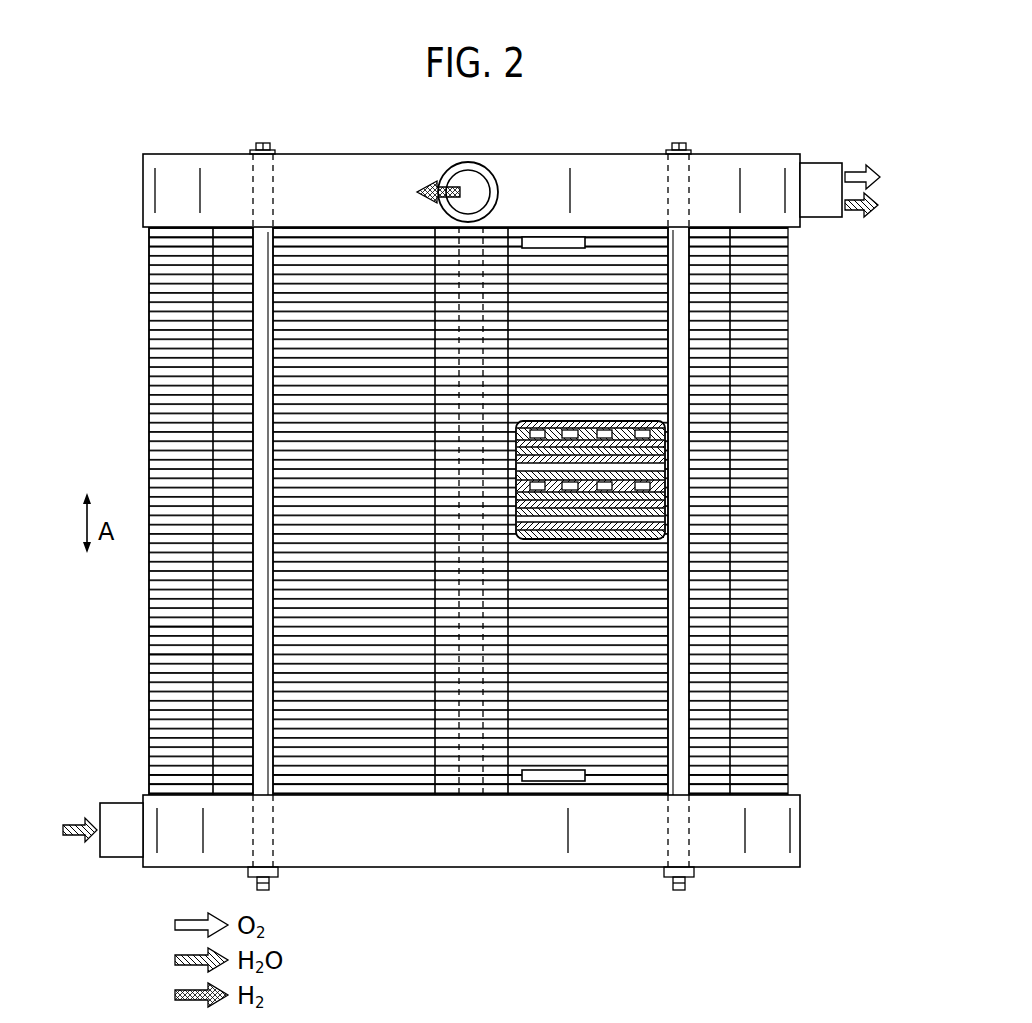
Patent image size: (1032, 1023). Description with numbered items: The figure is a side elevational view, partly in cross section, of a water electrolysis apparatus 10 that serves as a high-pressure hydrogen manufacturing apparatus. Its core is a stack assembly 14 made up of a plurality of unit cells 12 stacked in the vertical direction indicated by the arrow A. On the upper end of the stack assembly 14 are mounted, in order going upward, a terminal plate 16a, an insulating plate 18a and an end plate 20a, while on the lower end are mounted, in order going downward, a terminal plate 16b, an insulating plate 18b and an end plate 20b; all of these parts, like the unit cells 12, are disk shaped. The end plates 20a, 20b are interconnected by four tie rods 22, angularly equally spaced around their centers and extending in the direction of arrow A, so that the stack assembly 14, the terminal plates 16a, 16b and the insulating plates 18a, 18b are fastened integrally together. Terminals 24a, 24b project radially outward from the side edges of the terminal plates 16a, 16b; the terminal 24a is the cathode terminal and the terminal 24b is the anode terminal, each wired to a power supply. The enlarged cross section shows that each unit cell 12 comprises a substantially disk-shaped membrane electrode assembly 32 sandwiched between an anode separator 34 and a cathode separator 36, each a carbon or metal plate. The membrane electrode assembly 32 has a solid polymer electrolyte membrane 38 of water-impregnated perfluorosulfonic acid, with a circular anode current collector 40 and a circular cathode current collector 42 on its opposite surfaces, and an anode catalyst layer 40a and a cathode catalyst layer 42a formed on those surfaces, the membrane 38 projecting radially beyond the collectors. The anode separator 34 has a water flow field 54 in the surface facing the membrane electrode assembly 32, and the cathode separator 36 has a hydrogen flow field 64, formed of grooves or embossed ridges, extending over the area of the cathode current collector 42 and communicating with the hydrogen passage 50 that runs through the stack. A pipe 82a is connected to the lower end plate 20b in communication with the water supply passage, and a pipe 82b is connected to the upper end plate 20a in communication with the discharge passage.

The water electrolysis apparatus 10 is at (674, 102).
The unit cell 12 is at (147, 625).
The stack assembly 14 is at (100, 630).
The terminal plate 16a is at (385, 242).
The terminal plate 16b is at (390, 792).
The insulating plate 18a is at (333, 233).
The insulating plate 18b is at (333, 792).
The end plate 20a is at (541, 151).
The end plate 20b is at (731, 869).
The tie rod 22 is at (262, 793).
The terminal 24a is at (540, 240).
The terminal 24b is at (545, 785).
The membrane electrode assembly 32 is at (651, 458).
The anode separator 34 is at (573, 508).
The cathode separator 36 is at (590, 390).
The solid polymer electrolyte membrane 38 is at (664, 452).
The anode current collector 40 is at (666, 467).
The anode catalyst layer 40a is at (538, 467).
The cathode current collector 42 is at (664, 440).
The cathode catalyst layer 42a is at (528, 422).
The hydrogen passage 50 is at (462, 796).
The water flow field 54 is at (637, 466).
The hydrogen flow field 64 is at (641, 430).
The pipe 82a is at (446, 181).
The pipe 82b is at (818, 178).